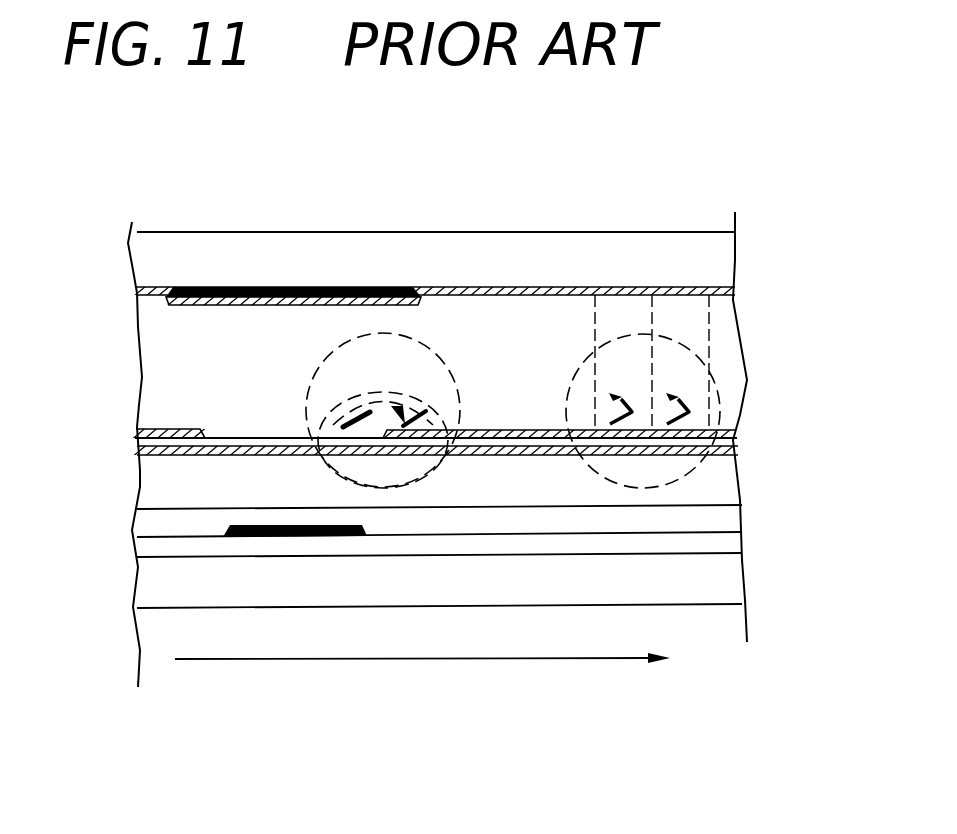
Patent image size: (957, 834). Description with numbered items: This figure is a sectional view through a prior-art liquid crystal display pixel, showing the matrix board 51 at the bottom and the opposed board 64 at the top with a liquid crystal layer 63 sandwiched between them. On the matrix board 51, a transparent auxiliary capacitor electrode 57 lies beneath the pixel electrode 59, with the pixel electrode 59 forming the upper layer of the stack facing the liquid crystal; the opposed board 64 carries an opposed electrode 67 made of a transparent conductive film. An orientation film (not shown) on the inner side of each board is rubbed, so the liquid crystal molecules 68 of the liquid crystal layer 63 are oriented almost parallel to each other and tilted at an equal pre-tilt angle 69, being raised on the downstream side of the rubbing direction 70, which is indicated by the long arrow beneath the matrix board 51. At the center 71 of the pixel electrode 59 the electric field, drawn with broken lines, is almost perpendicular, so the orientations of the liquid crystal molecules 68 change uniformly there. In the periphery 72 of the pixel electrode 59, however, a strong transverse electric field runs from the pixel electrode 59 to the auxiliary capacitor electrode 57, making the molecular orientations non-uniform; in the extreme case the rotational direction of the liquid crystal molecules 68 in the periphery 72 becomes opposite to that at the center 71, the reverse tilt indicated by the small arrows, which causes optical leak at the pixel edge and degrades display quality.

The matrix board 51 is at (797, 413).
The auxiliary capacitor electrode 57 is at (138, 452).
The pixel electrode 59 is at (138, 432).
The liquid crystal layer 63 is at (797, 310).
The opposed board 64 is at (797, 222).
The opposed electrode 67 is at (138, 292).
The liquid crystal molecules 68 is at (683, 420).
The pre-tilt angle 69 is at (690, 415).
The rubbing direction 70 is at (250, 659).
The center of the pixel electrode 71 is at (670, 337).
The periphery of the pixel electrode 72 is at (447, 367).